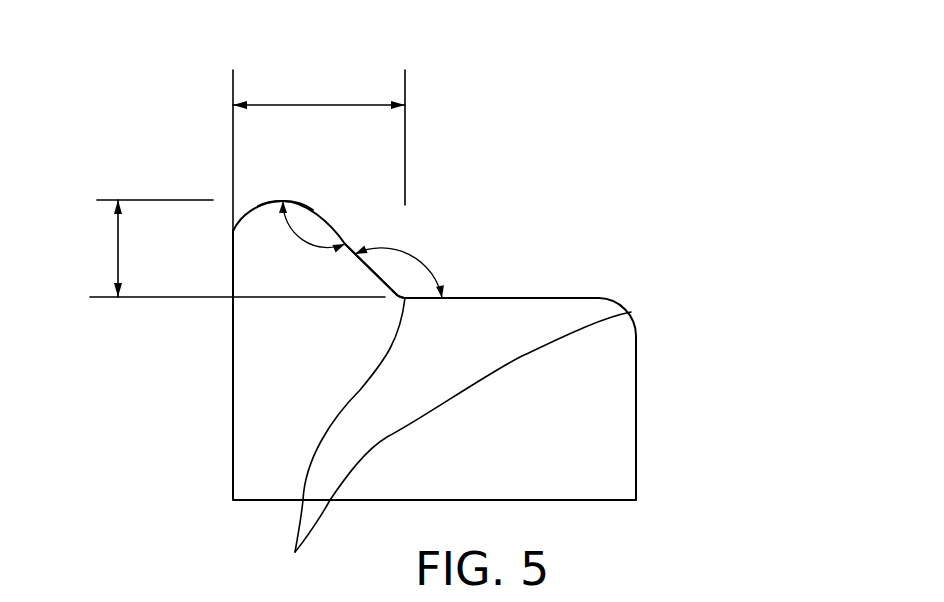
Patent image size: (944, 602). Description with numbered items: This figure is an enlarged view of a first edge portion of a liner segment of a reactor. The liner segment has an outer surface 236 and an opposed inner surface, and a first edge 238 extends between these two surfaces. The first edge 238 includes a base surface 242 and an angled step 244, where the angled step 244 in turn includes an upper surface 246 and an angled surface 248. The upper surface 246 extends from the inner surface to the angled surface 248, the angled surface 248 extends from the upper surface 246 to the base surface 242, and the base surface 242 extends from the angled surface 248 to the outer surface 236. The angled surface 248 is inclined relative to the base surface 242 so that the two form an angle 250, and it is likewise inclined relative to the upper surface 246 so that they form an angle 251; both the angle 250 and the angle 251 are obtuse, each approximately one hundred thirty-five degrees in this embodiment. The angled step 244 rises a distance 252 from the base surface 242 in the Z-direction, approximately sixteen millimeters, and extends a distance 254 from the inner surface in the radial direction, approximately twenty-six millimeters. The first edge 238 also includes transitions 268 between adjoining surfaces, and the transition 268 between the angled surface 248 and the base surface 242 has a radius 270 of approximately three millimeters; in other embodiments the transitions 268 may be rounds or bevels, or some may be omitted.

The outer surface 236 is at (636, 455).
The first edge 238 is at (563, 298).
The base surface 242 is at (583, 298).
The angled step 244 is at (207, 175).
The upper surface 246 is at (270, 200).
The angled surface 248 is at (347, 241).
The angle 250 is at (415, 258).
The angle 251 is at (295, 233).
The distance 252 is at (118, 250).
The distance 254 is at (347, 104).
The transitions 268 is at (233, 232).
The radius 270 is at (405, 262).